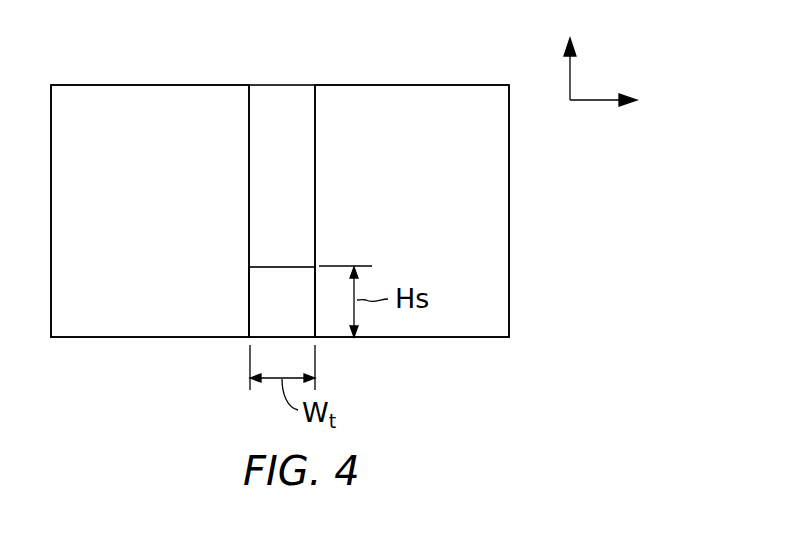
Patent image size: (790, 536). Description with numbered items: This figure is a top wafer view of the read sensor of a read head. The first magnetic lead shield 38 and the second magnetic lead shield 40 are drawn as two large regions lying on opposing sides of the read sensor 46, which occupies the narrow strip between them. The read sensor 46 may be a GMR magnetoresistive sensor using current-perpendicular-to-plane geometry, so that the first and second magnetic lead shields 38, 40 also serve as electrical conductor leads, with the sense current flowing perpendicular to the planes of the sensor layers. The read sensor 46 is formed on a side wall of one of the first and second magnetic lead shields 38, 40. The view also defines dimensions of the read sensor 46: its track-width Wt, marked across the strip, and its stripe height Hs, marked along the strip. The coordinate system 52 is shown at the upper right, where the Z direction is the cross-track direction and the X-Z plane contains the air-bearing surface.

The first magnetic lead shield 38 is at (161, 219).
The second magnetic lead shield 40 is at (420, 218).
The read sensor 46 is at (262, 302).
The coordinate system 52 is at (592, 102).